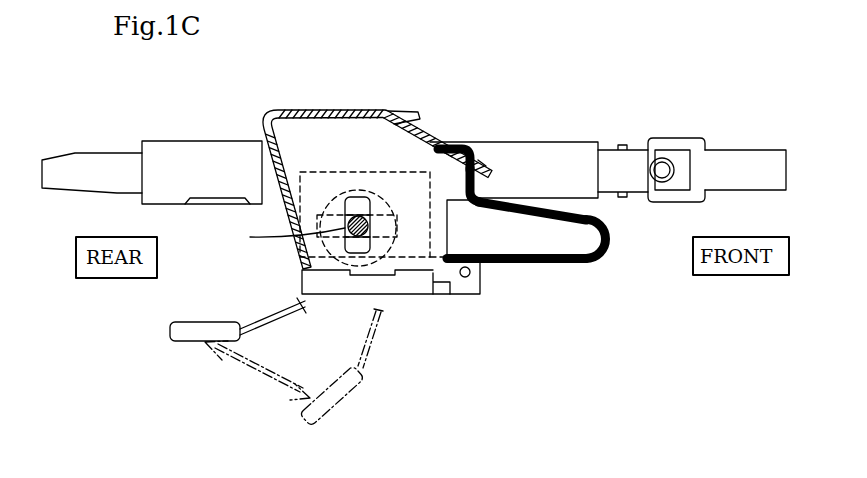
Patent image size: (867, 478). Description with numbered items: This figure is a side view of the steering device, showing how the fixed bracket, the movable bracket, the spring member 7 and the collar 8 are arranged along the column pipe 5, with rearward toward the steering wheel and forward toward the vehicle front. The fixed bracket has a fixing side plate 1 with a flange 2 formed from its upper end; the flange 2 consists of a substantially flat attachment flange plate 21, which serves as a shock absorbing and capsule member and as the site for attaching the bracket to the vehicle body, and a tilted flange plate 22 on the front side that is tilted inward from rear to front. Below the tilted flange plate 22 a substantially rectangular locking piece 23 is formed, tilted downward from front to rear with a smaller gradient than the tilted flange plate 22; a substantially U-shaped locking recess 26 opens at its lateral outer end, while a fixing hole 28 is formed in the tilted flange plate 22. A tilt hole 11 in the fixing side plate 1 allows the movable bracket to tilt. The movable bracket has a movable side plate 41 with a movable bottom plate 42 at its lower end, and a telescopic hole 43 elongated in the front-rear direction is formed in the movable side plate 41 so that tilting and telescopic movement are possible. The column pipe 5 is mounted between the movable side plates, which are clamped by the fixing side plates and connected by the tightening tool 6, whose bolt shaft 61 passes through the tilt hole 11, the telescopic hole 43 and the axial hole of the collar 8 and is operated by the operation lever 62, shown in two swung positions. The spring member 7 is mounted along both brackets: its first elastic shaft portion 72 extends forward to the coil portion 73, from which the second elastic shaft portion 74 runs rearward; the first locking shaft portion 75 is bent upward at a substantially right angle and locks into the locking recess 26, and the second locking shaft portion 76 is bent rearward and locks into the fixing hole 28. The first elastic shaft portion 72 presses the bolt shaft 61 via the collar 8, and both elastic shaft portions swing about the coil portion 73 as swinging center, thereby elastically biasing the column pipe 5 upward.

The fixing side plate 1 is at (375, 130).
The flange 2 is at (391, 155).
The column pipe 5 is at (228, 140).
The tightening tool 6 is at (368, 218).
The spring member 7 is at (547, 215).
The collar 8 is at (318, 178).
The tilt hole 11 is at (362, 207).
The attachment flange plate 21 is at (358, 110).
The tilted flange plate 22 is at (433, 118).
The locking piece 23 is at (487, 170).
The locking recess 26 is at (483, 160).
The fixing hole 28 is at (448, 156).
The movable side plate 41 is at (334, 193).
The movable bottom plate 42 is at (337, 297).
The telescopic hole 43 is at (452, 228).
The bolt shaft 61 is at (286, 237).
The operation lever 62 is at (191, 322).
The first elastic shaft portion 72 is at (490, 265).
The coil portion 73 is at (610, 240).
The second elastic shaft portion 74 is at (506, 212).
The first locking shaft portion 75 is at (475, 183).
The second locking shaft portion 76 is at (466, 146).